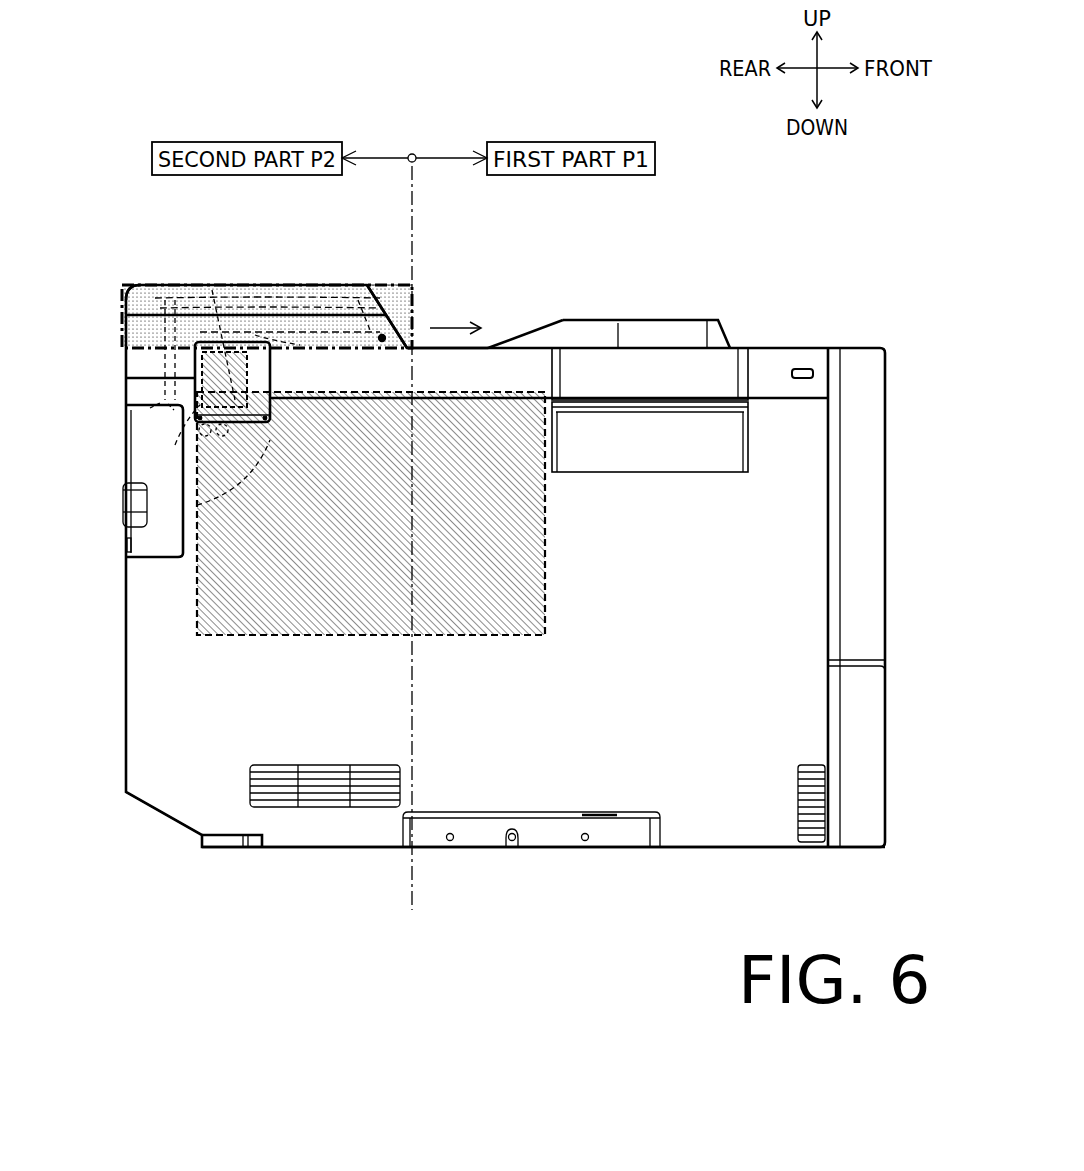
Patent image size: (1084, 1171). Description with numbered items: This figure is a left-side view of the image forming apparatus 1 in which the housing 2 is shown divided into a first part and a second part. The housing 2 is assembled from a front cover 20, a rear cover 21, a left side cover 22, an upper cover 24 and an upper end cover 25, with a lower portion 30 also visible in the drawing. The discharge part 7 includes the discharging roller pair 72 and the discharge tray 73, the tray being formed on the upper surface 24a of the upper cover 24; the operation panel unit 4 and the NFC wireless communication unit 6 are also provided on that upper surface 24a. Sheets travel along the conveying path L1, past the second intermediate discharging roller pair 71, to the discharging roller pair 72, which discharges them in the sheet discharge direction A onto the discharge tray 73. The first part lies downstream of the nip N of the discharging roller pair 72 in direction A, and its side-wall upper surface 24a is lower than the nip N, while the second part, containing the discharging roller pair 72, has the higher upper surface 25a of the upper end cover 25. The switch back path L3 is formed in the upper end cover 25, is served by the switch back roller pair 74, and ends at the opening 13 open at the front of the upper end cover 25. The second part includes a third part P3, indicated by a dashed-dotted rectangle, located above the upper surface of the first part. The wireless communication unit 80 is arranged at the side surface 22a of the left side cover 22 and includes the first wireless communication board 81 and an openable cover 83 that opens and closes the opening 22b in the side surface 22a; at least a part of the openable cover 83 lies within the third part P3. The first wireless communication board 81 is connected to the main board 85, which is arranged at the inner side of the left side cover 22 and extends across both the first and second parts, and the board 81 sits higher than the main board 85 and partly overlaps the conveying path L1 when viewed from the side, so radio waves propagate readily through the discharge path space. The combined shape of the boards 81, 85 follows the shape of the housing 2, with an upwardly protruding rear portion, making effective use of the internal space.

The image forming apparatus 1 is at (728, 232).
The housing 2 is at (331, 851).
The operation panel unit 4 is at (638, 340).
The wireless communication unit 6 is at (780, 346).
The discharge part 7 is at (421, 345).
The opening 13 is at (380, 300).
The front cover 20 is at (895, 487).
The rear cover 21 is at (120, 676).
The left side cover 22 is at (694, 779).
The side surface 22a is at (178, 773).
The opening 22b is at (165, 413).
The upper cover 24 is at (498, 370).
The upper surface 24a is at (618, 323).
The upper end cover 25 is at (275, 285).
The upper surface 25a is at (155, 285).
The sheet feed cassette 30 is at (894, 776).
The second intermediate discharging roller pair 71 is at (175, 445).
The discharging roller pair 72 is at (358, 300).
The discharge tray 73 is at (532, 330).
The switch back roller pair 74 is at (150, 408).
The wireless communication unit 80 is at (190, 365).
The first wireless communication board 81 is at (124, 298).
The openable cover 83 is at (275, 362).
The main board 85 is at (197, 595).
The sheet discharge direction A is at (466, 329).
The nip N is at (431, 345).
The conveying path L1 is at (197, 505).
The switch back path L3 is at (212, 290).
The third part P3 is at (133, 283).